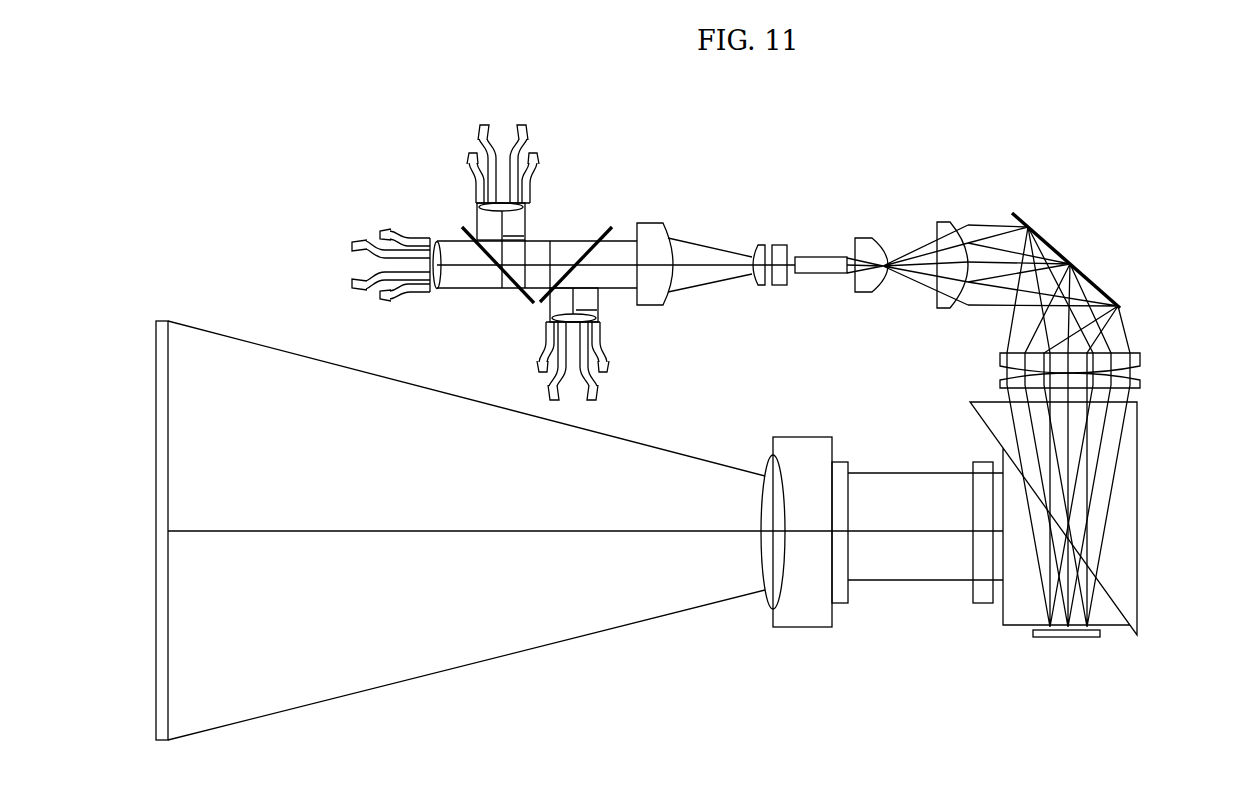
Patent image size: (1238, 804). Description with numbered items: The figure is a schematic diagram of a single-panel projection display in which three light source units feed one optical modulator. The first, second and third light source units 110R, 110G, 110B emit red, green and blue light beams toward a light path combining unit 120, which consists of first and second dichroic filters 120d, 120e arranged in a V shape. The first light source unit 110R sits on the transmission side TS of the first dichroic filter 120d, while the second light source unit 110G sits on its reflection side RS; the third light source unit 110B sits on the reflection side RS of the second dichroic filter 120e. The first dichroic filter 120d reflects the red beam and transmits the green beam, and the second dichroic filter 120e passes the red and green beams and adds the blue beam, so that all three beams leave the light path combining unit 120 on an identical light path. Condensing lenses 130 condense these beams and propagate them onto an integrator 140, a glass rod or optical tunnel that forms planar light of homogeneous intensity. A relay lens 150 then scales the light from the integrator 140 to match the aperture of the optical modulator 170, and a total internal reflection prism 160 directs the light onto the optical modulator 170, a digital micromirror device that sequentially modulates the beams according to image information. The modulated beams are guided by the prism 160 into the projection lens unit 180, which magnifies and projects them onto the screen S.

The screen S is at (155, 706).
The second light source unit 110G is at (378, 248).
The first light source unit 110R is at (516, 166).
The third light source unit 110B is at (597, 372).
The light path combining unit 120 is at (520, 312).
The first dichroic filter 120d is at (508, 281).
The second dichroic filter 120e is at (570, 285).
The condensing lens 130 is at (477, 207).
The integrator 140 is at (817, 274).
The relay lens 150 is at (1006, 178).
The total internal reflection prism 160 is at (1137, 523).
The optical modulator 170 is at (1082, 638).
The projection lens unit 180 is at (992, 653).
The transmission side TS is at (485, 287).
The reflection side RS is at (550, 264).